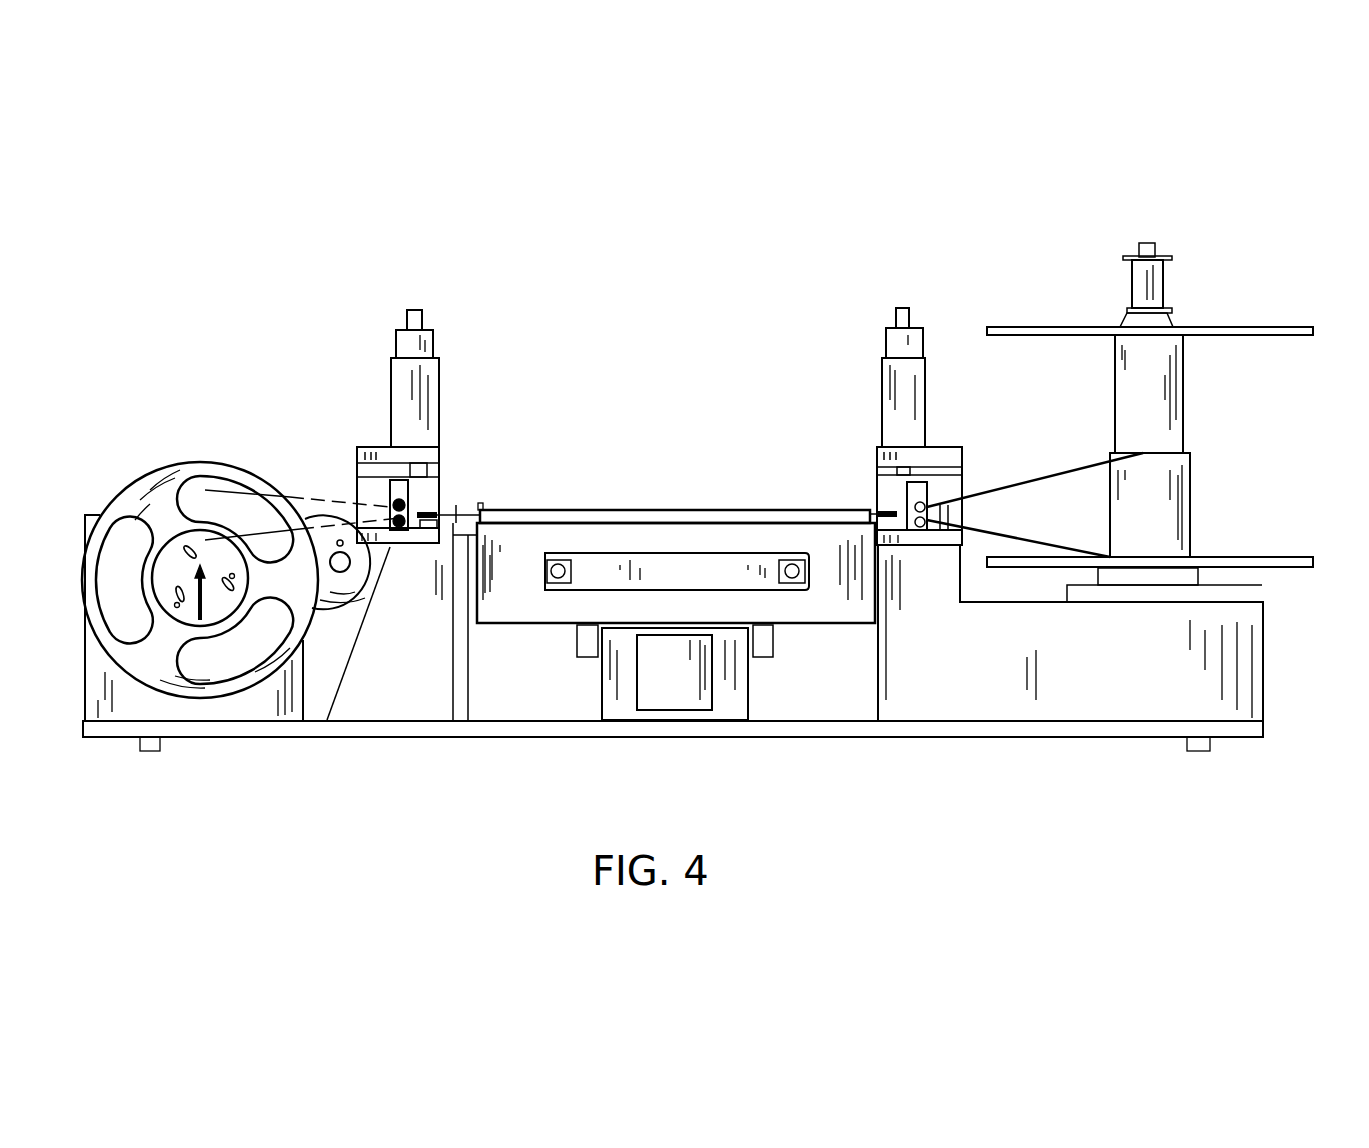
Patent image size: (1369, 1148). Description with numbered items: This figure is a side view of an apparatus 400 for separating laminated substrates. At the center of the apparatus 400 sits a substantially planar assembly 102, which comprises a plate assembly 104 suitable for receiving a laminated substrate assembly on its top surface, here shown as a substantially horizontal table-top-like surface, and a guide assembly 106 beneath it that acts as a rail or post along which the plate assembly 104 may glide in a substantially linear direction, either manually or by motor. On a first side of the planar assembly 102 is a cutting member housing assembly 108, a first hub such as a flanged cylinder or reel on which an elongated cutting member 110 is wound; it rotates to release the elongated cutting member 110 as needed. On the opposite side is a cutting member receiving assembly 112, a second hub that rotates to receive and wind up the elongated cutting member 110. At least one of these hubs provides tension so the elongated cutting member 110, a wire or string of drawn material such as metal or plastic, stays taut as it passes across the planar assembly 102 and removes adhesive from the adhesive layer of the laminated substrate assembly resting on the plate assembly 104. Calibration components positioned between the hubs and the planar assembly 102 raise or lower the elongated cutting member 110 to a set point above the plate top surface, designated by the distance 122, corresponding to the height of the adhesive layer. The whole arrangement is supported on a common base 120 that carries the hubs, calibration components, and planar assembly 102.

The fiber processing system 400 is at (230, 249).
The substantially planar assembly 102 is at (870, 505).
The plate assembly 104 is at (518, 612).
The guide assembly 106 is at (671, 695).
The cutting member housing assembly 108 is at (1257, 327).
The elongated cutting member 110 is at (1042, 477).
The cutting member receiving assembly 112 is at (108, 508).
The base 120 is at (1115, 730).
The distance 122 is at (456, 507).